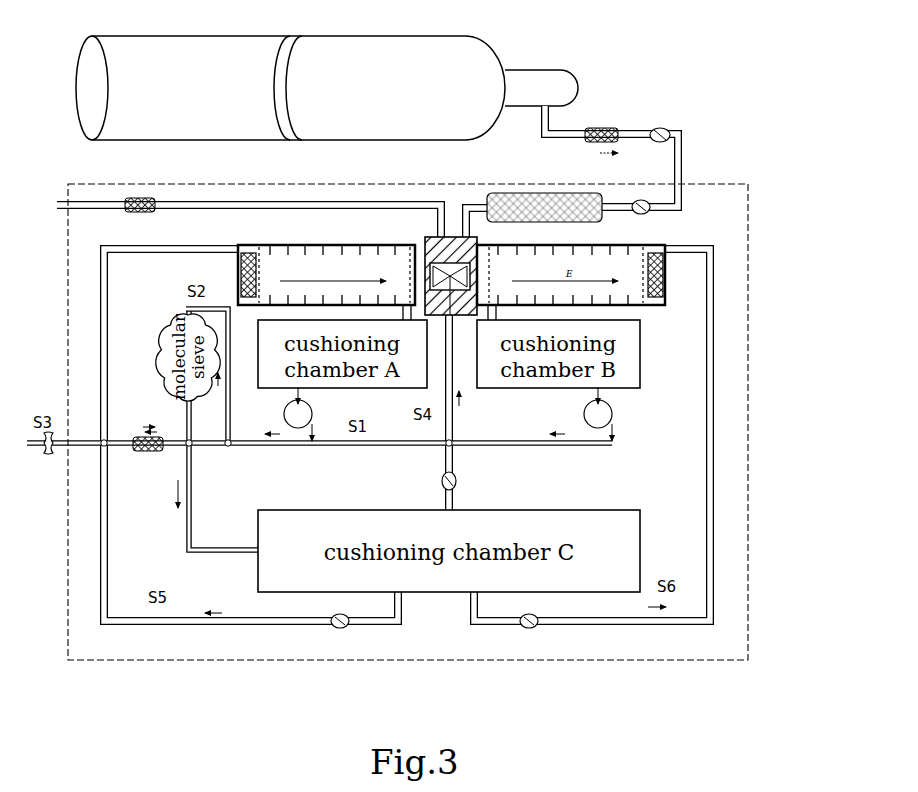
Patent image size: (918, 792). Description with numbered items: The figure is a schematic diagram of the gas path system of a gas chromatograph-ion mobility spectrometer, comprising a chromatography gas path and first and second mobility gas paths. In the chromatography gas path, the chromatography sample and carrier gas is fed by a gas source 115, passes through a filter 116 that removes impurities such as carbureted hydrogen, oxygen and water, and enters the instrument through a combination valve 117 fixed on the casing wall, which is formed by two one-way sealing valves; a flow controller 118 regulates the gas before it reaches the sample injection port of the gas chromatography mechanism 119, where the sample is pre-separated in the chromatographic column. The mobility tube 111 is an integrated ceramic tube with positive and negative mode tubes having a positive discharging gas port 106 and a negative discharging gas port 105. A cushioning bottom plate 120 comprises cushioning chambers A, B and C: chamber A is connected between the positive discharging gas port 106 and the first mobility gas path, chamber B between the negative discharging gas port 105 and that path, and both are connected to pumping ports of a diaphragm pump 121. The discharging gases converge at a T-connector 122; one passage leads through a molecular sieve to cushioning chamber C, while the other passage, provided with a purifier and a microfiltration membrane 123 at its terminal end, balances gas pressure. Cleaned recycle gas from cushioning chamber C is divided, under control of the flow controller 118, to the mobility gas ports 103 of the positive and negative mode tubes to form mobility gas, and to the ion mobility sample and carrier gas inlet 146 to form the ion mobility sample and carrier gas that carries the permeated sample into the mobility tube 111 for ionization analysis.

The mobility gas port 103 is at (240, 246).
The negative discharging gas port 105 is at (494, 320).
The positive discharging gas port 106 is at (407, 318).
The mobility tube 111 is at (292, 262).
The gas source 115 is at (560, 70).
The filter 116 is at (605, 128).
The combination valve 117 is at (670, 132).
The flow controller 118 is at (650, 205).
The gas chromatography mechanism 119 is at (525, 205).
The cushioning bottom plate 120 is at (300, 184).
The diaphragm pump 121 is at (600, 420).
The T-connector 122 is at (231, 446).
The microfiltration membrane 123 is at (50, 456).
The ion mobility sample and carrier gas inlet 146 is at (447, 327).